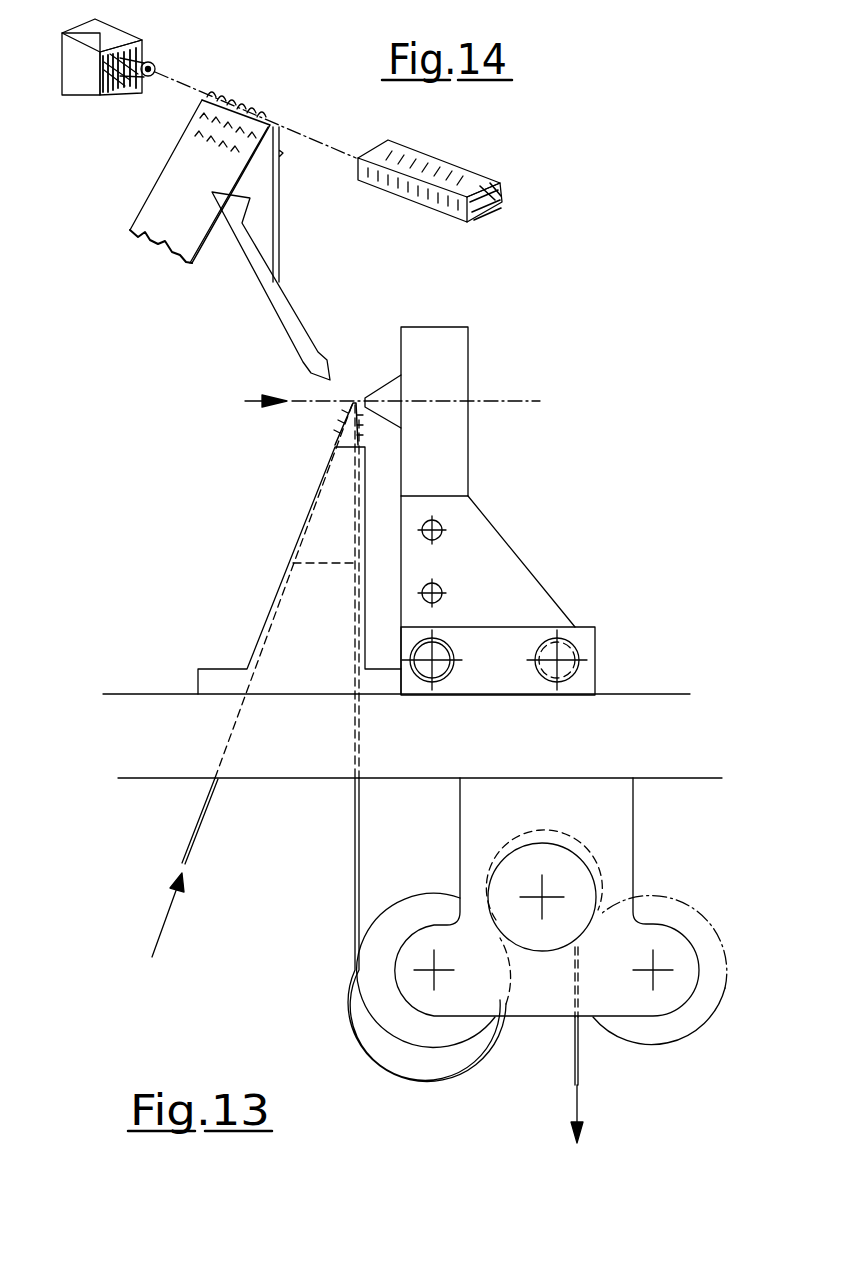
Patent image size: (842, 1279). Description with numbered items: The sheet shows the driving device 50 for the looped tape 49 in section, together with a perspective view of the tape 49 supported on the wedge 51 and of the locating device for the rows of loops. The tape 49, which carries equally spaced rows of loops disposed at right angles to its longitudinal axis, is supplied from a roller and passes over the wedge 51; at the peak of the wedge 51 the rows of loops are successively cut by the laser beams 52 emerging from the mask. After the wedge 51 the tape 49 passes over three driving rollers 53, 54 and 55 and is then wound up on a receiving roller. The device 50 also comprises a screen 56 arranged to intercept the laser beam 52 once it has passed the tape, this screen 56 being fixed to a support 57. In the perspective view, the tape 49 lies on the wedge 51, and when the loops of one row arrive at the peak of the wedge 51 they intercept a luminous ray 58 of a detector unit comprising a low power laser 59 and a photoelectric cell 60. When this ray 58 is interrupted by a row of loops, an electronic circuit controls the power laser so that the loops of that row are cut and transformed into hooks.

In FIG. 14, the tape 49 is at (178, 190).
In FIG. 13, the tape 49 is at (190, 825).
In FIG. 13, the device 50 is at (180, 660).
In FIG. 13, the wedge 51 is at (340, 428).
In FIG. 13, the laser beams 52 is at (245, 401).
In FIG. 13, the driving roller 53 is at (422, 1035).
In FIG. 13, the driving roller 54 is at (560, 870).
In FIG. 13, the driving roller 55 is at (665, 1032).
In FIG. 13, the screen 56 is at (388, 390).
In FIG. 13, the support 57 is at (487, 548).
In FIG. 14, the luminous ray 58 is at (313, 134).
In FIG. 14, the low power laser 59 is at (116, 36).
In FIG. 14, the photoelectric cell 60 is at (466, 175).